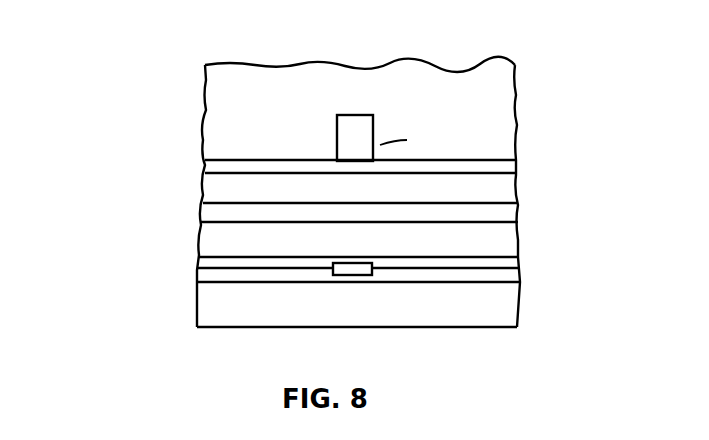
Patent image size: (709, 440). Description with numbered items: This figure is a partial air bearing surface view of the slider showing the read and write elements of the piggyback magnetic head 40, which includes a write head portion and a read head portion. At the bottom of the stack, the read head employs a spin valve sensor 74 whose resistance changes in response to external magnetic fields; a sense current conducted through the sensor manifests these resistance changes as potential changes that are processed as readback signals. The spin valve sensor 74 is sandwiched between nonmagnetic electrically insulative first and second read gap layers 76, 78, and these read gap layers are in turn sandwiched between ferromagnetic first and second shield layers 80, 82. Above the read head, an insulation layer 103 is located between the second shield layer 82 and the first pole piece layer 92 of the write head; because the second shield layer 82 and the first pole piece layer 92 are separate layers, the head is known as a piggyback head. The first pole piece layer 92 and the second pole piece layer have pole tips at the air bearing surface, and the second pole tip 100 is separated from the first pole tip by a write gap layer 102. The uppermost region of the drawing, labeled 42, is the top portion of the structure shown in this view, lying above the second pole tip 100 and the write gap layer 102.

The piggyback magnetic head 40 is at (543, 78).
The overcoat / top layer 42 is at (212, 90).
The second pole tip 100 is at (364, 125).
The write gap layer 102 is at (289, 170).
The first pole piece layer 92 is at (210, 188).
The insulation layer 103 is at (487, 214).
The second shield layer 82 is at (208, 238).
The first read gap layer 76 is at (233, 281).
The second read gap layer 78 is at (477, 263).
The spin valve sensor 74 is at (355, 268).
The first shield layer 80 is at (497, 306).